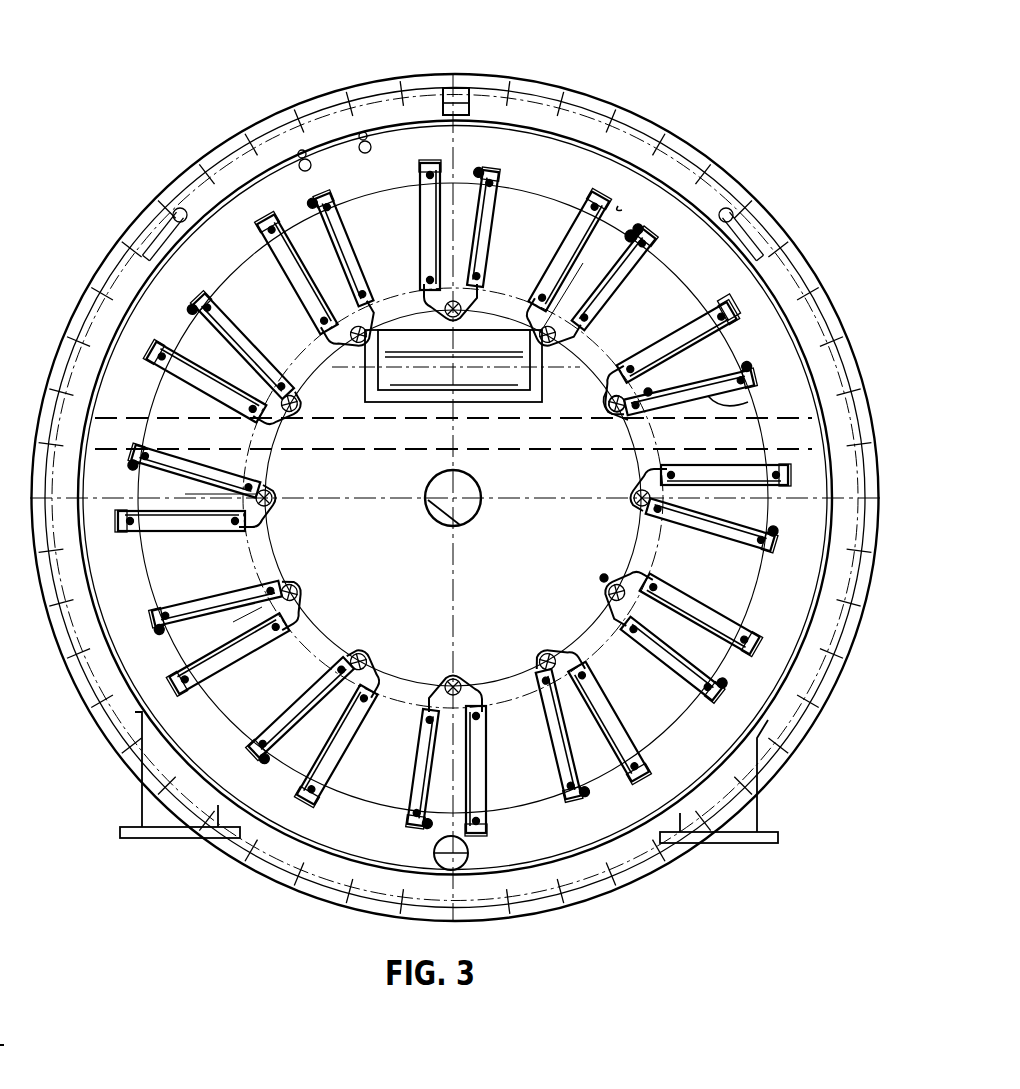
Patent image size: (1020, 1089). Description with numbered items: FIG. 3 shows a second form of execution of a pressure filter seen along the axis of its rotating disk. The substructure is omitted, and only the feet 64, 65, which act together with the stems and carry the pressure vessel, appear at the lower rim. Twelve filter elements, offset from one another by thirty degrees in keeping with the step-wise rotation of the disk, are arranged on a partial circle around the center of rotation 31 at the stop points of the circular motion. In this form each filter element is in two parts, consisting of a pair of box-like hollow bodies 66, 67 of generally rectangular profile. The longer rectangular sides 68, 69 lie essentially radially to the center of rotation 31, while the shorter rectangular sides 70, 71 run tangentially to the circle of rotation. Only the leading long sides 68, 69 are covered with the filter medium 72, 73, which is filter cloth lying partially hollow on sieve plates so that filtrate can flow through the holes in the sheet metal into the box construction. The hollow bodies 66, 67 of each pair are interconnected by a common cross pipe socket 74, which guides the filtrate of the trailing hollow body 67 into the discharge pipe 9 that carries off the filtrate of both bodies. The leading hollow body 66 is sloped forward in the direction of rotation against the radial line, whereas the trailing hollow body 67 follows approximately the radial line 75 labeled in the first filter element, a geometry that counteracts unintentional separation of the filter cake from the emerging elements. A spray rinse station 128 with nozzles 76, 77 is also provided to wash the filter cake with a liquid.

The spray rinse station 128 is at (399, 136).
The nozzle 76 is at (303, 157).
The nozzle 77 is at (366, 130).
The trailing hollow body 67 is at (601, 192).
The radial line 75 is at (624, 200).
The leading hollow body 66 is at (634, 231).
The filter medium 73 is at (737, 295).
The longer rectangular side 69 is at (642, 398).
The shorter rectangular side 70 is at (755, 371).
The filter medium 72 is at (752, 405).
The center of rotation 31 is at (473, 520).
The shorter rectangular side 71 is at (613, 412).
The longer rectangular side 68 is at (646, 396).
The common cross pipe socket 74 is at (600, 578).
The discharge pipe 9 is at (622, 592).
The foot 65 is at (157, 808).
The foot 64 is at (759, 813).